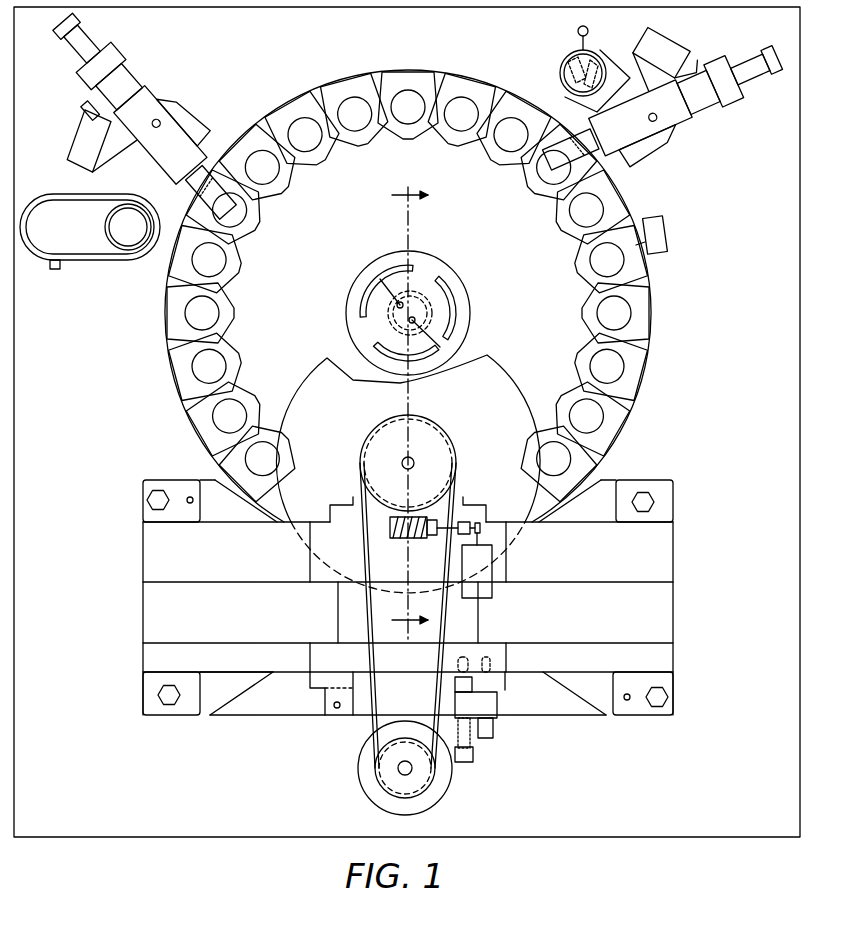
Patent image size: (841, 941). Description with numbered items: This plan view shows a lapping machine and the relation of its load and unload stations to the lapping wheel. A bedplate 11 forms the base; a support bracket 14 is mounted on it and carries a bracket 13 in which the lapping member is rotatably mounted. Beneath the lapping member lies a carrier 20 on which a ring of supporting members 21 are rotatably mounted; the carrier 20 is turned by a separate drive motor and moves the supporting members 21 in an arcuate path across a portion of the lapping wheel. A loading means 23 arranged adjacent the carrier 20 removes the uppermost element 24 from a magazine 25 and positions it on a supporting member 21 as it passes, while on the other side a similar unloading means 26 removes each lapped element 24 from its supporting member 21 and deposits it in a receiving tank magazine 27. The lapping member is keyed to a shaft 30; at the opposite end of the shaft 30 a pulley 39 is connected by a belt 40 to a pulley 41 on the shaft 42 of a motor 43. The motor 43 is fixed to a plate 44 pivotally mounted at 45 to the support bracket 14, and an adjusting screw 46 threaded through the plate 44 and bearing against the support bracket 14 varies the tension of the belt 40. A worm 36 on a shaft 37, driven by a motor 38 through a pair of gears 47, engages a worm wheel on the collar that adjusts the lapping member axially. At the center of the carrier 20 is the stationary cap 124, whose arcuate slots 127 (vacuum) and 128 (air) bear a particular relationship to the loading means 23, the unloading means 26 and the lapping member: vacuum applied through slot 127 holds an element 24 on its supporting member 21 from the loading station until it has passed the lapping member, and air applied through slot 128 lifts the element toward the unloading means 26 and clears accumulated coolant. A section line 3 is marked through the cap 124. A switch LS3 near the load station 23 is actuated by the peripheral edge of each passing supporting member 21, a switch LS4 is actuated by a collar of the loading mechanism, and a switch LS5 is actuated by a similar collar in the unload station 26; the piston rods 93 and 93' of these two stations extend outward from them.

The bedplate 11 is at (716, 347).
The bracket 13 is at (352, 502).
The support bracket 14 is at (143, 620).
The carrier 20 is at (306, 322).
The supporting members 21 is at (345, 82).
The loading means 23 is at (675, 147).
The element 24 is at (590, 258).
The magazine 25 is at (566, 60).
The unloading means 26 is at (162, 98).
The receiving tank magazine 27 is at (92, 250).
The shaft 30 is at (412, 458).
The worm 36 is at (392, 538).
The shaft 37 is at (440, 538).
The motor 38 is at (492, 592).
The pulley 39 is at (440, 452).
The belt 40 is at (347, 614).
The pulley 41 is at (430, 790).
The shaft 42 is at (398, 768).
The motor 43 is at (365, 784).
The plate 44 is at (500, 706).
The pivot 45 is at (325, 706).
The adjusting screw 46 is at (470, 762).
The pair of gears 47 is at (479, 526).
The piston rod 93 is at (756, 63).
The piston rod 93' is at (89, 39).
The stationary cap 124 is at (445, 274).
The vacuum slot 127 is at (455, 320).
The air slot 128 is at (378, 282).
The switch LS3 is at (666, 232).
The switch LS4 is at (676, 52).
The switch LS5 is at (84, 120).
The section line 3- 3 is at (410, 408).